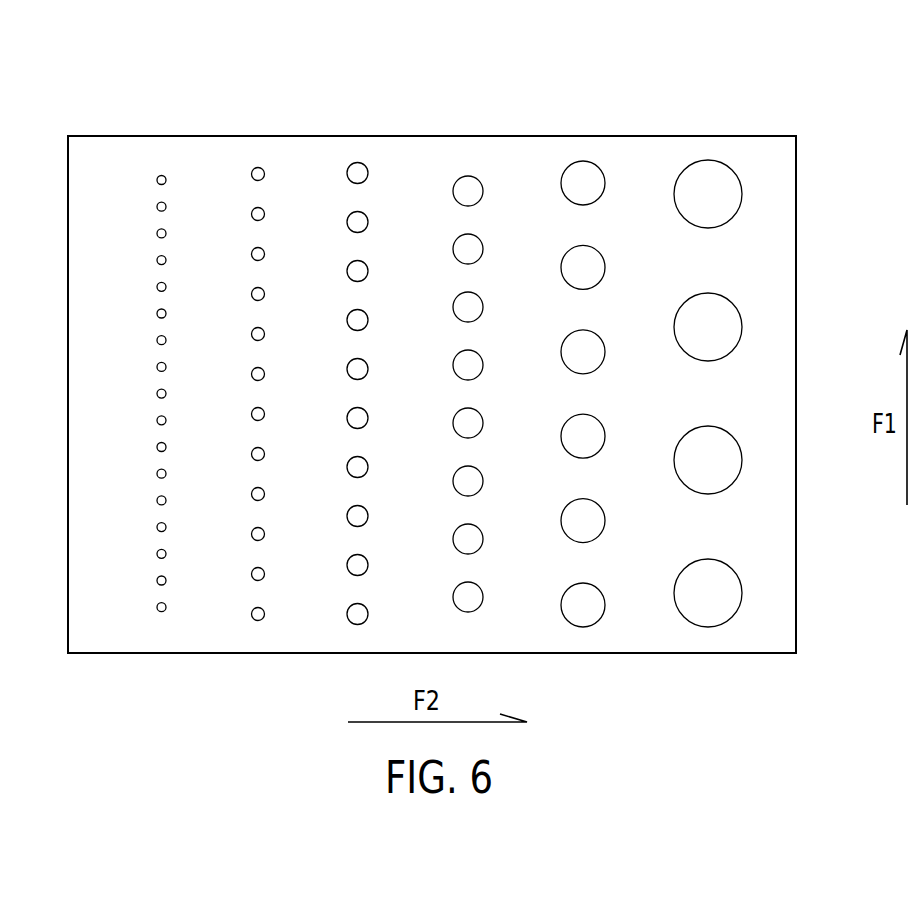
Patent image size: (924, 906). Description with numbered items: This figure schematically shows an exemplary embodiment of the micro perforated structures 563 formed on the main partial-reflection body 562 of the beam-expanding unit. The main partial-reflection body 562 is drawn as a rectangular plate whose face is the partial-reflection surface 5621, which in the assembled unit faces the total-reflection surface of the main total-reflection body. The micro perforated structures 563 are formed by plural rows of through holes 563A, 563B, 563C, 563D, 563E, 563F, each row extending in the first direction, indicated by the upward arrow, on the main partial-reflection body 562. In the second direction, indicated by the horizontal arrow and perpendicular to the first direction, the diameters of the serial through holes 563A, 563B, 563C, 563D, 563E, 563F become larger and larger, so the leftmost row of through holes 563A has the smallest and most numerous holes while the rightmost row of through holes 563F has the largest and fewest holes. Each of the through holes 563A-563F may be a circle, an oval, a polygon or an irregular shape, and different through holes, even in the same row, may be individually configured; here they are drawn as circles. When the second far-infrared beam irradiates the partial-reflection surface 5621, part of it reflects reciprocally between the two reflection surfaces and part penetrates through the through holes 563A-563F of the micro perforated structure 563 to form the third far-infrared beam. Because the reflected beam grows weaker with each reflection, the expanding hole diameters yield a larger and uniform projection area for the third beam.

The main partial-reflection body 562 is at (729, 653).
The partial-reflection surface 5621 is at (775, 561).
The micro perforated structures 563 is at (738, 75).
The through holes 563A is at (160, 176).
The through holes 563B is at (257, 167).
The through holes 563C is at (355, 167).
The through holes 563D is at (466, 183).
The through holes 563E is at (583, 178).
The through holes 563F is at (702, 178).